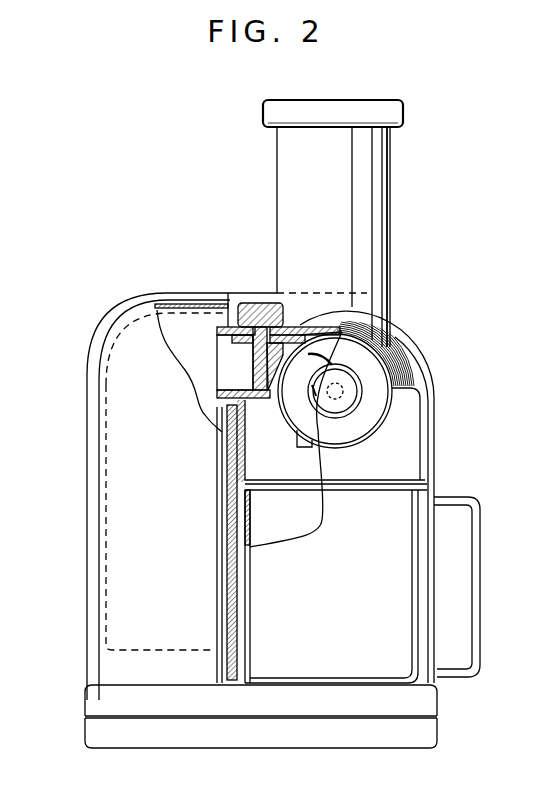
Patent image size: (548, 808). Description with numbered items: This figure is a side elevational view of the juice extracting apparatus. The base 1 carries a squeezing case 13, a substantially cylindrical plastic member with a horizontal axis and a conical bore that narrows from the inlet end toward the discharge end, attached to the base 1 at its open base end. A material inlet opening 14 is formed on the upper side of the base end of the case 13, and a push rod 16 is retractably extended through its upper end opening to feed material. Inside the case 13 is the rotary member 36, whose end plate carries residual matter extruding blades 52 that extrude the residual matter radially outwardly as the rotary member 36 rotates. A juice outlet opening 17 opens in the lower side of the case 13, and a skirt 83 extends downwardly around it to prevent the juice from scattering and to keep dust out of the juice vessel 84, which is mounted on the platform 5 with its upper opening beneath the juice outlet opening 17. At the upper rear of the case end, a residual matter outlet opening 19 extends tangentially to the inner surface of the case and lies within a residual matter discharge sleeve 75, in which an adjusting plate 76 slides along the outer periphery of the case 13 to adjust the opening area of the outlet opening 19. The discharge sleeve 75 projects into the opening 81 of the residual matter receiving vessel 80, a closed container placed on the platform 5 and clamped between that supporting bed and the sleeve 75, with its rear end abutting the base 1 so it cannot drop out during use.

The base 1 is at (432, 470).
The platform 5 is at (218, 690).
The squeezing case 13 is at (282, 420).
The material inlet opening 14 is at (386, 170).
The push rod 16 is at (373, 110).
The juice outlet opening 17 is at (305, 450).
The residual matter outlet opening 19 is at (280, 376).
The rotary member 36 is at (343, 383).
The residual matter extruding blades 52 is at (342, 333).
The residual matter discharge sleeve 75 is at (222, 394).
The adjusting plate 76 is at (257, 362).
The residual matter receiving vessel 80 is at (112, 484).
The opening 81 is at (215, 300).
The skirt 83 is at (257, 457).
The juice vessel 84 is at (388, 683).